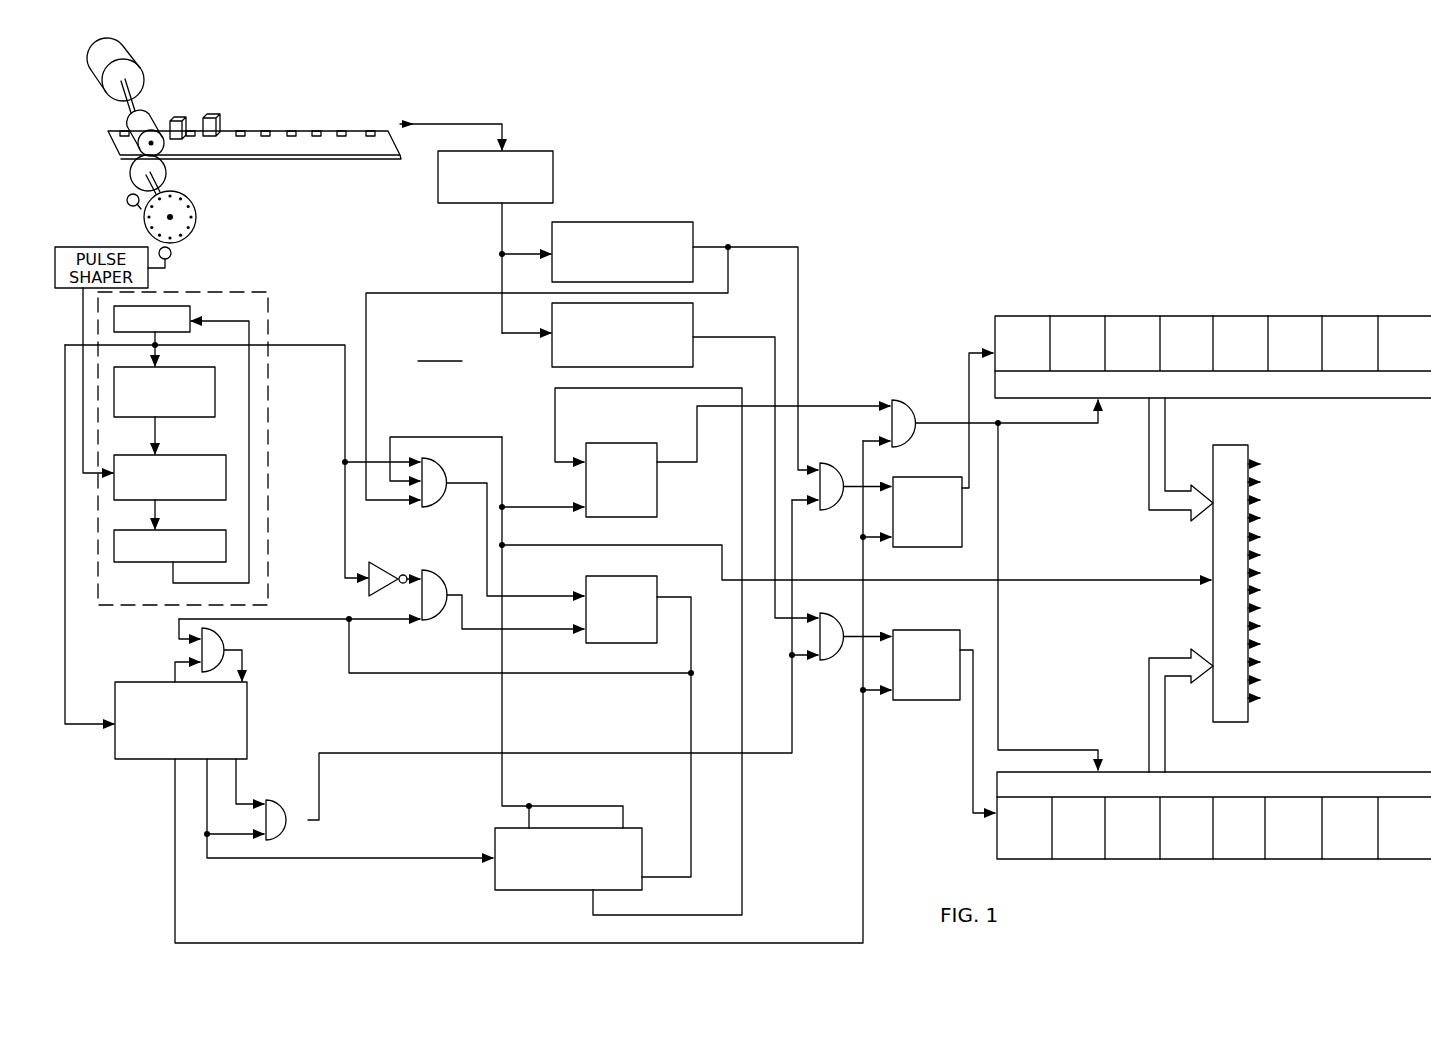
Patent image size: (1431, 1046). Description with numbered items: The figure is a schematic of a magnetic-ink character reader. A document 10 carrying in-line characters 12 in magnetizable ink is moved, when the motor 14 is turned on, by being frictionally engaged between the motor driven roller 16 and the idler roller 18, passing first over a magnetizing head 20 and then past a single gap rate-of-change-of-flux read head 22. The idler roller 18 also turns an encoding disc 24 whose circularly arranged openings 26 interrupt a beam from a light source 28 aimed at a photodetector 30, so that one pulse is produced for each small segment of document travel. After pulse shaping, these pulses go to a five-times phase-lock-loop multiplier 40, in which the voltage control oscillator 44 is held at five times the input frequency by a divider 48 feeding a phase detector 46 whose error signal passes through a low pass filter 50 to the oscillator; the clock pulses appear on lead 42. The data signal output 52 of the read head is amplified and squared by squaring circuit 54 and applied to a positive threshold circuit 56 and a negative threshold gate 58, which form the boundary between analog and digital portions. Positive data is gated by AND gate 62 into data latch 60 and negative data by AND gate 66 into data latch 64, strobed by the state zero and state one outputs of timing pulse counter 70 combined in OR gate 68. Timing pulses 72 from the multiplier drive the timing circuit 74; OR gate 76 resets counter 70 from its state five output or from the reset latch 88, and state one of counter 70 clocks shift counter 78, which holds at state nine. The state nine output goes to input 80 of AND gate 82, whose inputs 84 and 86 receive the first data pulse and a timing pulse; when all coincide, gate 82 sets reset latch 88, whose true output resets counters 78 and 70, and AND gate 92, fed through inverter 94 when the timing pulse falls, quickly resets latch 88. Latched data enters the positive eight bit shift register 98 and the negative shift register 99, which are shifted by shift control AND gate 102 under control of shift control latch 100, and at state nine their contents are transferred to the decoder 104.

The document 10 is at (312, 158).
The in-line characters 12 is at (292, 128).
The motor 14 is at (138, 80).
The motor driven roller 16 is at (132, 122).
The idler roller 18 is at (166, 182).
The magnetizing head 20 is at (176, 118).
The read head 22 is at (218, 115).
The encoding disc 24 is at (192, 235).
The openings 26 is at (152, 229).
The light source 28 is at (127, 198).
The photodetector 30 is at (172, 256).
The phase-lock-loop multiplier 40 is at (268, 303).
The lead 42 is at (345, 418).
The voltage control oscillator 44 is at (176, 315).
The phase detector 46 is at (226, 487).
The divider 48 is at (215, 396).
The low pass filter 50 is at (226, 548).
The data signal output 52 is at (447, 122).
The squaring circuit 54 is at (553, 180).
The positive threshold circuit 56 is at (693, 240).
The negative threshold gate 58 is at (693, 325).
The data latch 60 is at (978, 553).
The AND gate 62 is at (826, 465).
The data latch 64 is at (941, 700).
The AND gate 66 is at (838, 660).
The OR gate 68 is at (283, 800).
The timing pulse counter 70 is at (247, 725).
The timing pulses 72 is at (65, 661).
The timing circuit 74 is at (440, 350).
The OR gate 76 is at (244, 646).
The shift counter 78 is at (642, 850).
The input of AND gate 82 80 is at (398, 488).
The AND gate 82 is at (447, 478).
The input of AND gate 82 84 is at (378, 502).
The input of AND gate 82 86 is at (404, 460).
The reset latch 88 is at (660, 592).
The AND gate 92 is at (444, 592).
The inverter 94 is at (392, 584).
The data (positive) eight bit shift register 98 is at (1385, 398).
The b data (negative) shift register 99 is at (1380, 772).
The shift control latch 100 is at (616, 443).
The shift control AND gate 102 is at (918, 402).
The decoder 104 is at (1231, 722).